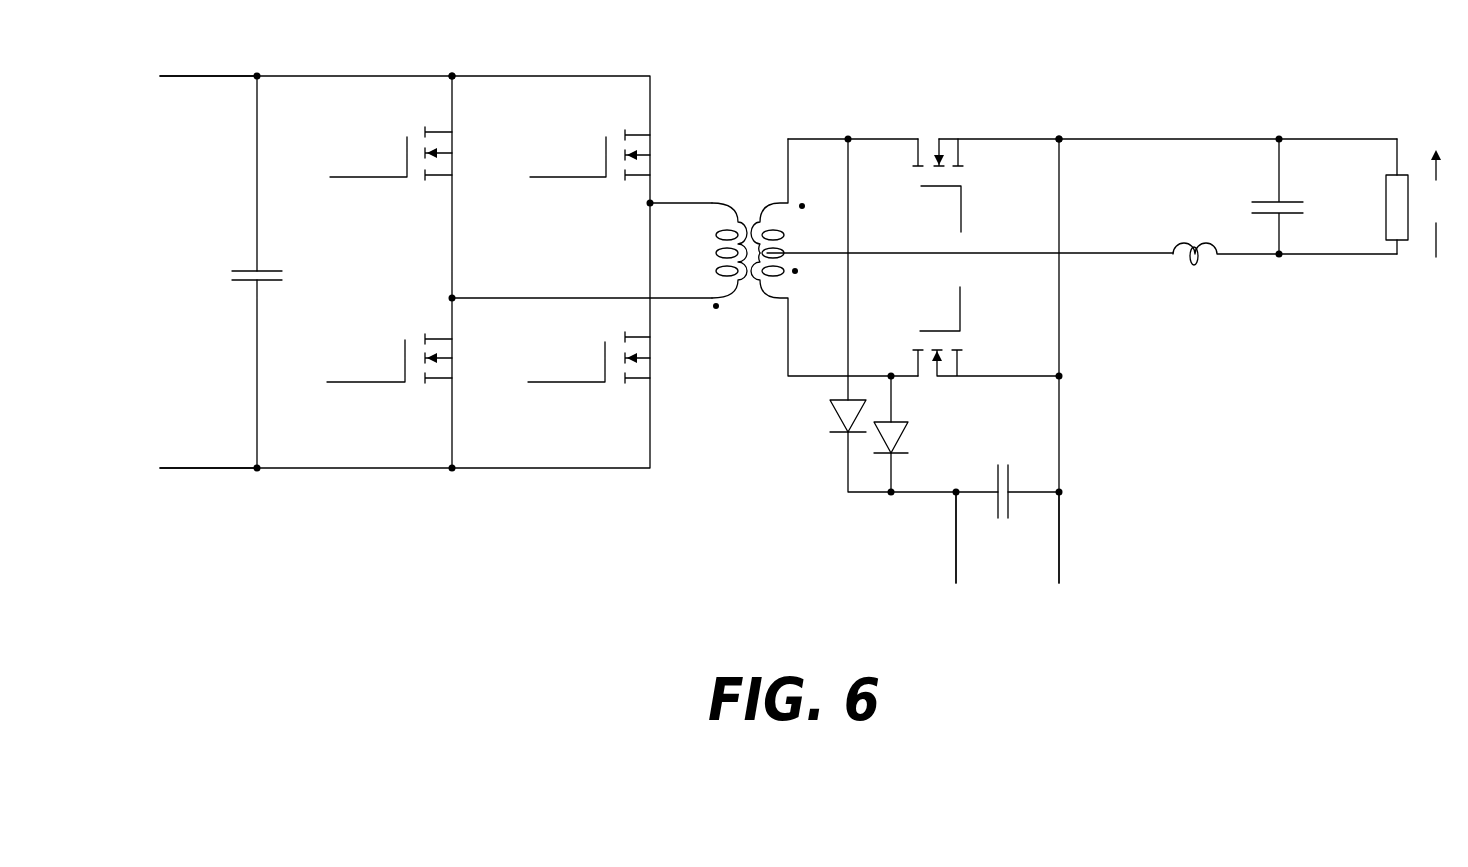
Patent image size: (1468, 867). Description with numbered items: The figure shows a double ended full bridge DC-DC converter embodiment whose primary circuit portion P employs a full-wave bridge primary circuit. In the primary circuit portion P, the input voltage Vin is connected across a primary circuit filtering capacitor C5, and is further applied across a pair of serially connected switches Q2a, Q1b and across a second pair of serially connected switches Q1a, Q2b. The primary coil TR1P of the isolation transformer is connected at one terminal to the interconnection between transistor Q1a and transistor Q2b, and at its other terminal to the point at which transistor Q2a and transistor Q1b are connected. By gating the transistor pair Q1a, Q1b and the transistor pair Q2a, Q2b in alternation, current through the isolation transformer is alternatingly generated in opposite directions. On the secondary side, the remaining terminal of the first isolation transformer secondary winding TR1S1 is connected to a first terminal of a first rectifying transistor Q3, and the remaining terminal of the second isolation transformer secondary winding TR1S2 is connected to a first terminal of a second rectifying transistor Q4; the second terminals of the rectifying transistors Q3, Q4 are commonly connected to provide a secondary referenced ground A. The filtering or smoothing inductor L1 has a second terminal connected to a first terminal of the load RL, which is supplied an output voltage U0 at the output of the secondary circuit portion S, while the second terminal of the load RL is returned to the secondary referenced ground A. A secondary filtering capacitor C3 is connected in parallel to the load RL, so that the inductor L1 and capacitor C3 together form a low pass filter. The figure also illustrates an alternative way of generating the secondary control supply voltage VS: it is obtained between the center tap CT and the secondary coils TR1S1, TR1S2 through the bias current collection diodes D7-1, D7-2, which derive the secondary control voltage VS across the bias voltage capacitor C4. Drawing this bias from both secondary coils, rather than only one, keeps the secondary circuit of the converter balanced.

The primary circuit portion P is at (453, 60).
The input voltage Vin is at (208, 272).
The primary circuit filtering capacitor C5 is at (271, 271).
The switch Q2a is at (398, 157).
The switch Q1a is at (607, 138).
The switch Q1b is at (405, 345).
The switch Q2b is at (600, 355).
The primary coil TR1P is at (706, 309).
The first isolation transformer secondary winding TR1S1 is at (782, 200).
The second isolation transformer secondary winding TR1S2 is at (778, 315).
The center tap CT is at (887, 252).
The first rectifying transistor Q3 is at (943, 188).
The second rectifying transistor Q4 is at (943, 329).
The secondary referenced ground A is at (1058, 118).
The bias current collection diode D7-1 is at (838, 414).
The bias current collection diode D7-2 is at (902, 437).
The bias voltage capacitor C4 is at (1012, 478).
The secondary control supply voltage VS is at (1007, 546).
The secondary circuit portion S is at (1160, 120).
The filtering or smoothing inductor L1 is at (1175, 243).
The secondary filtering capacitor C3 is at (1263, 200).
The load RL is at (1387, 203).
The output voltage U0 is at (1447, 199).